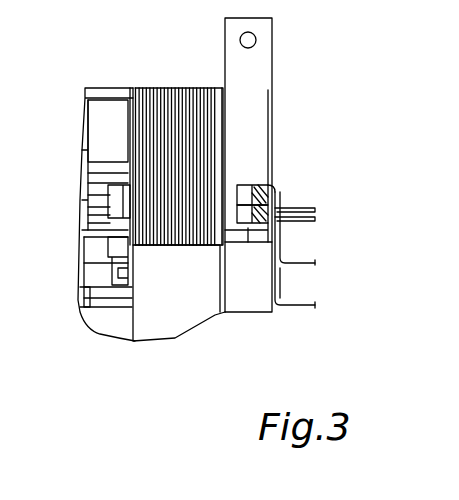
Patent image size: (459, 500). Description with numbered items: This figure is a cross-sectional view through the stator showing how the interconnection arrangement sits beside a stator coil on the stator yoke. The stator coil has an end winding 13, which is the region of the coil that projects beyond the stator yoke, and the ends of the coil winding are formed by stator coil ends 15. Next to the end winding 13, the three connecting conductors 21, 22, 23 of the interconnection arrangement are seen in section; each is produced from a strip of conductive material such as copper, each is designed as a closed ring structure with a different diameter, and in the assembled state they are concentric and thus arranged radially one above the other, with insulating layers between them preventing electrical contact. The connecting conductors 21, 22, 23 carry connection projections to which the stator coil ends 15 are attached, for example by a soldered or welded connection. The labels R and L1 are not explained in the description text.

The rotor region R is at (152, 78).
The end winding 13 is at (184, 97).
The conductor bar L1 is at (273, 58).
The connecting conductor 21 is at (277, 183).
The connecting conductor 22 is at (277, 200).
The connecting conductor 23 is at (250, 243).
The stator coil end 15 is at (303, 265).